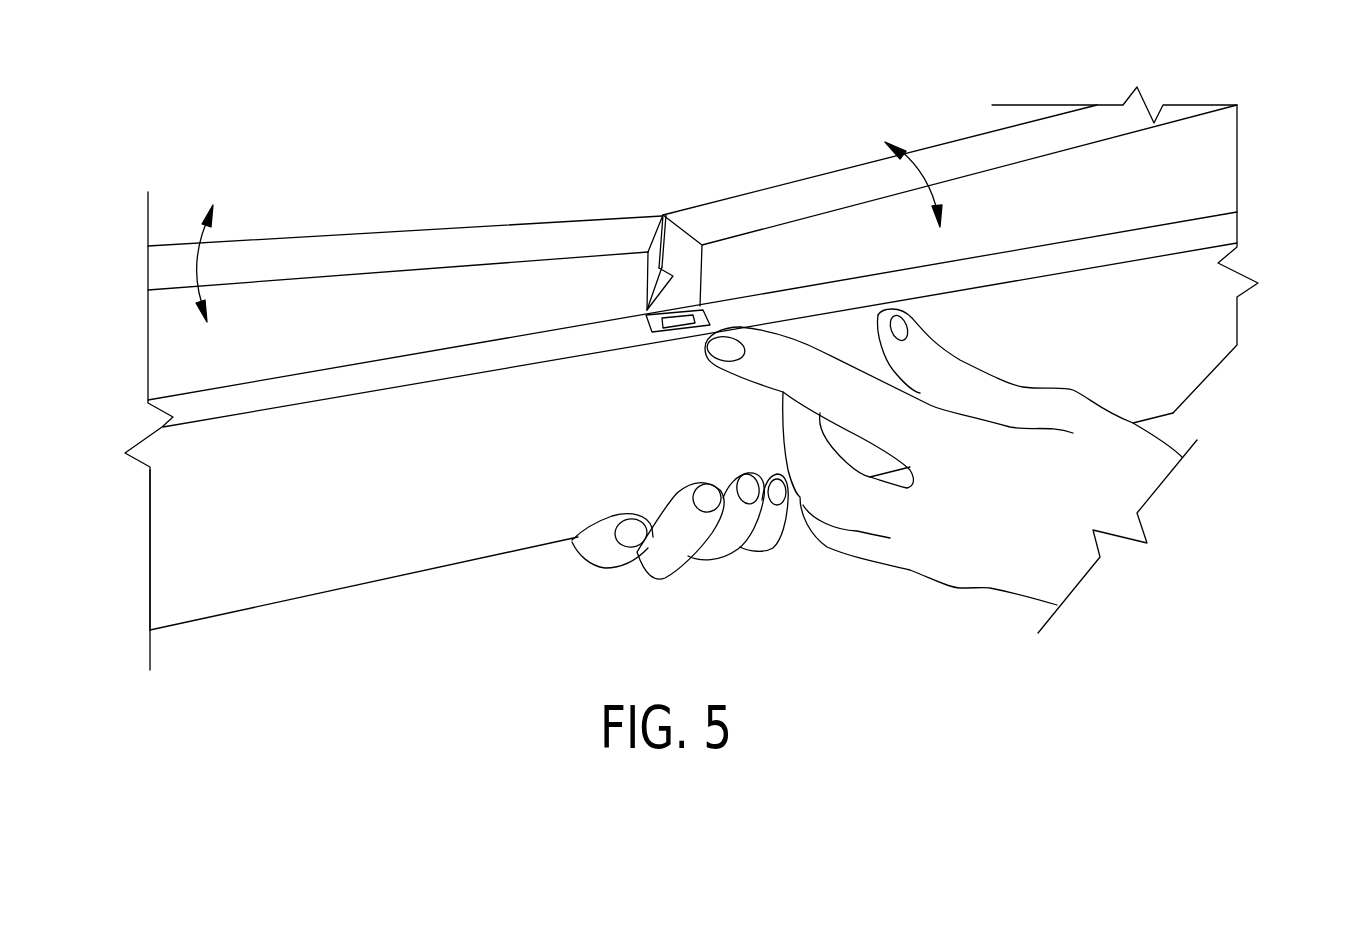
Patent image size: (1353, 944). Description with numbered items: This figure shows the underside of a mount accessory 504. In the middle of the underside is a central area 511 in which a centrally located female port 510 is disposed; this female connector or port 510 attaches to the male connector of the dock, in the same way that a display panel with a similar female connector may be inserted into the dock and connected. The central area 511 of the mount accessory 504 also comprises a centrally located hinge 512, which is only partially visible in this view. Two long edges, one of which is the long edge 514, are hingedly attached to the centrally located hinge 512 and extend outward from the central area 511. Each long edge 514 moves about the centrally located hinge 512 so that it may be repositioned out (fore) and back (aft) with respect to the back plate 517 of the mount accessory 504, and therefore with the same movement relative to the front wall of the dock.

The mount accessory 504 is at (384, 150).
The female port 510 is at (680, 320).
The central area 511 is at (650, 195).
The centrally located hinge 512 is at (667, 263).
The long edge 514 is at (1170, 182).
The back plate 517 is at (477, 525).